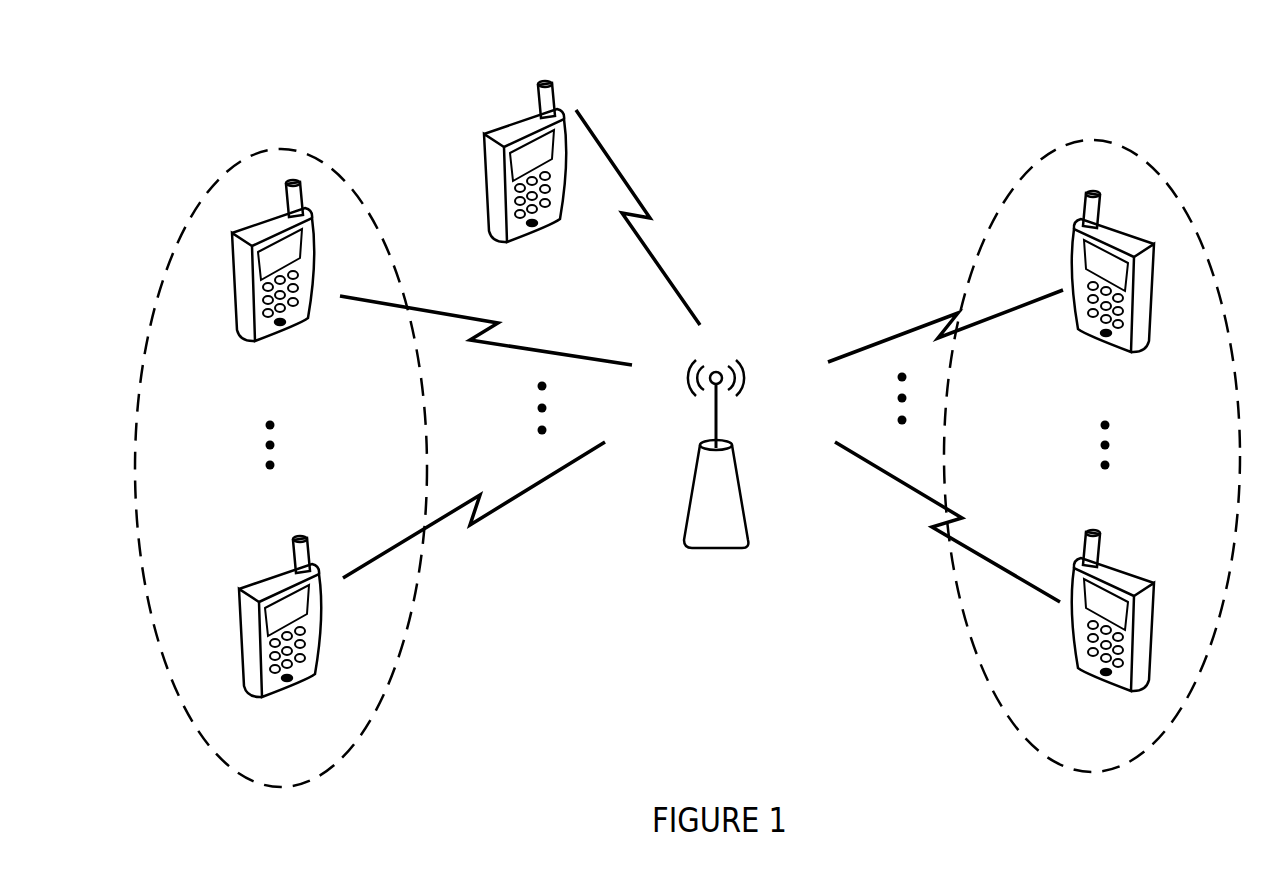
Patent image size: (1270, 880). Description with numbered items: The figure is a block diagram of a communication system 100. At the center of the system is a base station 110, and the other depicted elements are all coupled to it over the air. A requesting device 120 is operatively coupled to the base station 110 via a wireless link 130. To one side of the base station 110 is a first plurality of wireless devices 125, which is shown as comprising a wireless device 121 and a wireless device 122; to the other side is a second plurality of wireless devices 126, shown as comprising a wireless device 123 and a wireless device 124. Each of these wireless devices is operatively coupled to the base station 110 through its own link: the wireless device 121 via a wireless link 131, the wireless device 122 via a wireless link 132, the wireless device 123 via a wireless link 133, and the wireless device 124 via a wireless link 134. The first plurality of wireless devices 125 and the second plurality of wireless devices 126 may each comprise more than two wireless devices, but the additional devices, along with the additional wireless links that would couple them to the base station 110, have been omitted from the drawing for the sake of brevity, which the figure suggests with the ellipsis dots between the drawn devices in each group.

The communication system 100 is at (901, 66).
The base station 110 is at (718, 550).
The requesting device 120 is at (505, 241).
The wireless device 121 is at (252, 340).
The wireless device 122 is at (277, 694).
The wireless device 123 is at (1130, 349).
The wireless device 124 is at (1112, 684).
The first plurality of wireless devices 125 is at (238, 769).
The second plurality of wireless devices 126 is at (1048, 757).
The wireless link 130 is at (658, 258).
The wireless link 131 is at (537, 345).
The wireless link 132 is at (530, 487).
The wireless link 133 is at (897, 335).
The wireless link 134 is at (930, 507).